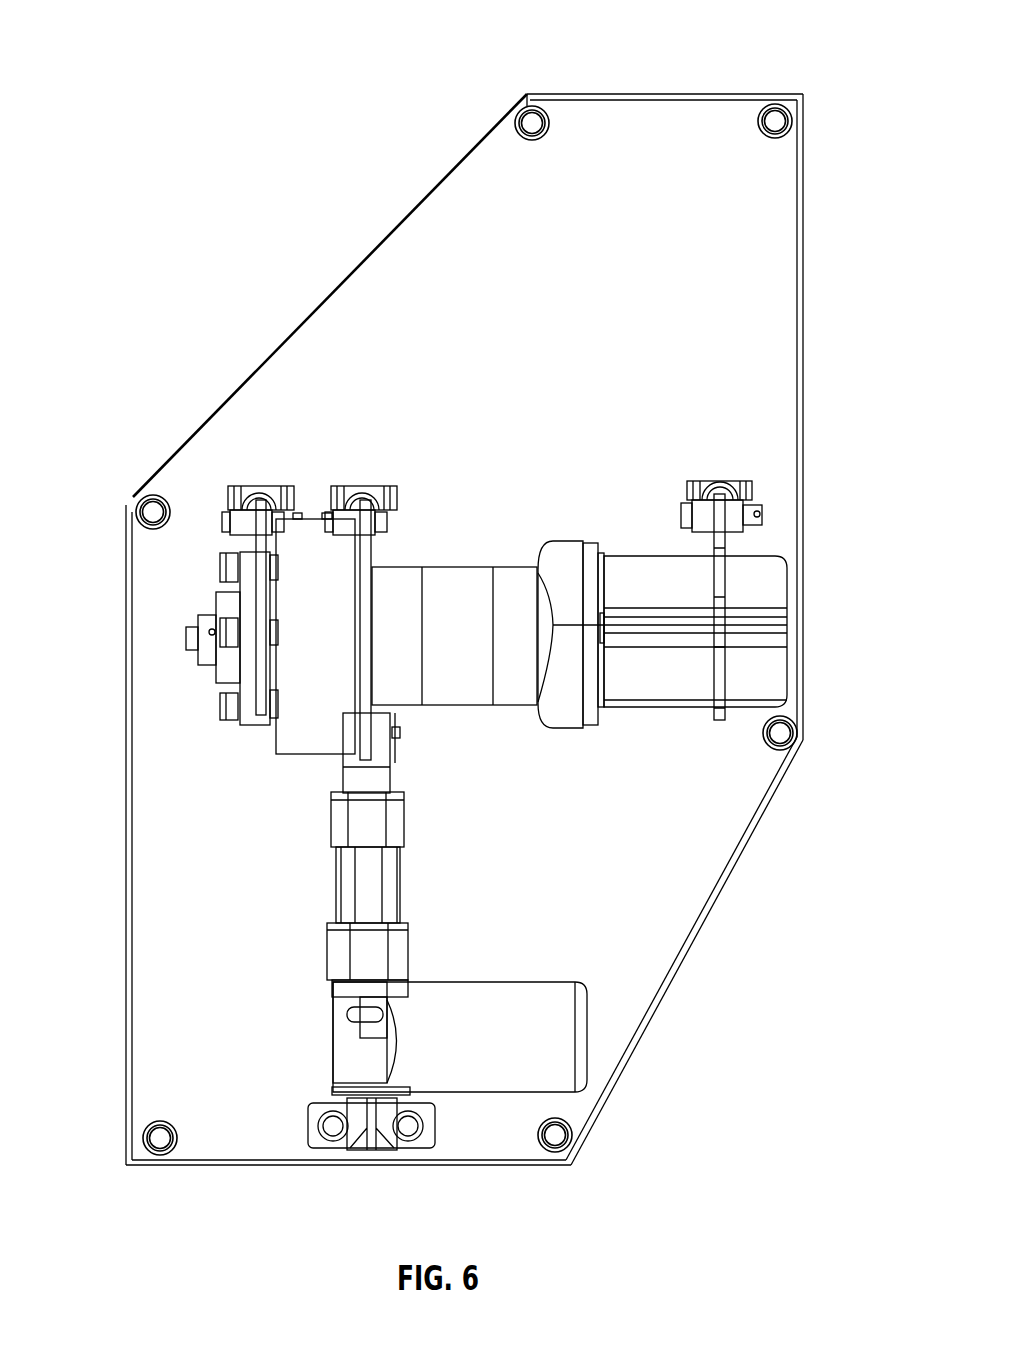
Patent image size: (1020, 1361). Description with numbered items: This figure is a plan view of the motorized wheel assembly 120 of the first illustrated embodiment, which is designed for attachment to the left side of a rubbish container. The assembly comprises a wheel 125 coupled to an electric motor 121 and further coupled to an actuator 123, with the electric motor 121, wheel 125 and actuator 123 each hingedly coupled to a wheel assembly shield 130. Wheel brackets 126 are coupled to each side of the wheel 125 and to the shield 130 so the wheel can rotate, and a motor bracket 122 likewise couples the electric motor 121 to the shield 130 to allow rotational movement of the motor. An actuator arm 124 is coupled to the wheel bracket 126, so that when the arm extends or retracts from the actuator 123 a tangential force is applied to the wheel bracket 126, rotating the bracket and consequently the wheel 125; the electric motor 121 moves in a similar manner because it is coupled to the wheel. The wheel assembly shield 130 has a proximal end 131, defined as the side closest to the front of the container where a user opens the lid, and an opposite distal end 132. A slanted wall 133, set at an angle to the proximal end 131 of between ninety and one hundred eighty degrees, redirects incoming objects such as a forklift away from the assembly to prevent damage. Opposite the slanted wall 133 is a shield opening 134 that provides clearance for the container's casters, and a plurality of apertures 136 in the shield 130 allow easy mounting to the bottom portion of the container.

The motorized wheel assembly 120 is at (250, 226).
The electric motor 121 is at (513, 567).
The motor bracket 122 is at (721, 492).
The actuator 123 is at (402, 880).
The actuator arm 124 is at (393, 780).
The wheel 125 is at (305, 524).
The wheel brackets 126 is at (262, 490).
The wheel assembly shield 130 is at (806, 262).
The proximal end 131 is at (323, 1166).
The distal end 132 is at (668, 95).
The slanted wall 133 is at (716, 925).
The shield opening 134 is at (323, 301).
The apertures 136 is at (522, 106).